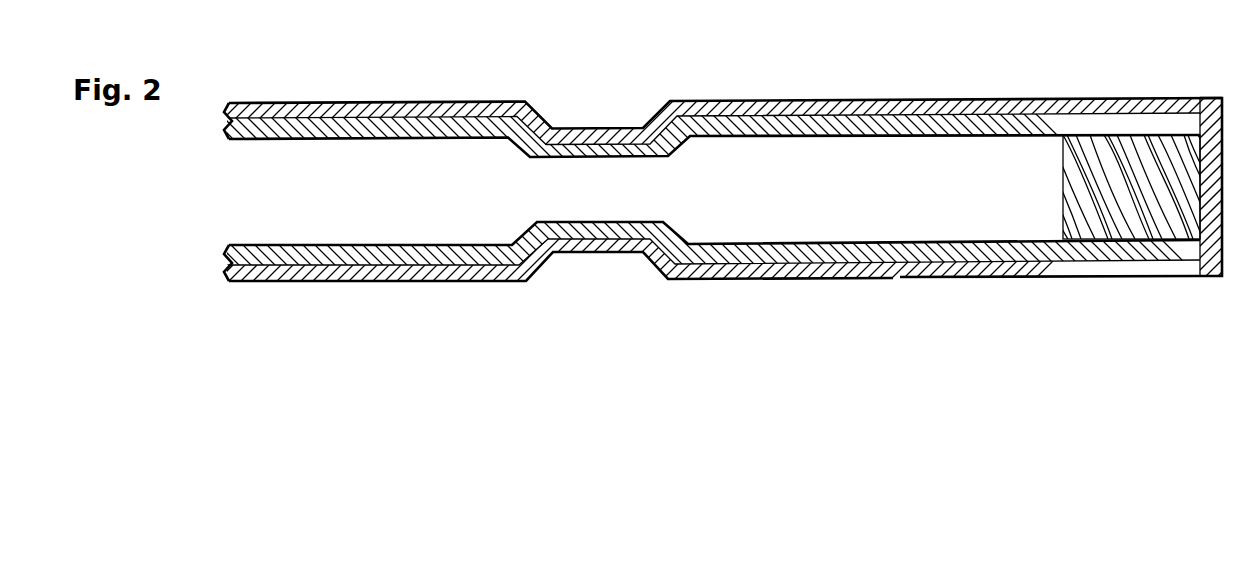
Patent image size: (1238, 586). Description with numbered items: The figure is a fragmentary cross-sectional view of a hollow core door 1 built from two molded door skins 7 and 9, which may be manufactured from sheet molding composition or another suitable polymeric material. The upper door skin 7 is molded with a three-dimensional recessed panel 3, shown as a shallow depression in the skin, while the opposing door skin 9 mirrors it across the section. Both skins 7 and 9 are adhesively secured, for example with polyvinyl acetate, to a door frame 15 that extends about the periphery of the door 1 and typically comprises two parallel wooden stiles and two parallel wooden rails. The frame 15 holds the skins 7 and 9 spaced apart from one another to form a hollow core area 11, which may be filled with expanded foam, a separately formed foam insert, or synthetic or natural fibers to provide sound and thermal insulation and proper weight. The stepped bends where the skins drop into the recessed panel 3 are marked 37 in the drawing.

The hollow core door 1 is at (1135, 78).
The recessed panel 3 is at (620, 87).
The molded door skin 7 is at (995, 100).
The molded door skin 9 is at (1020, 248).
The hollow core area 11 is at (402, 208).
The door frame 15 is at (1090, 177).
The stepped bend portion 37 is at (595, 223).